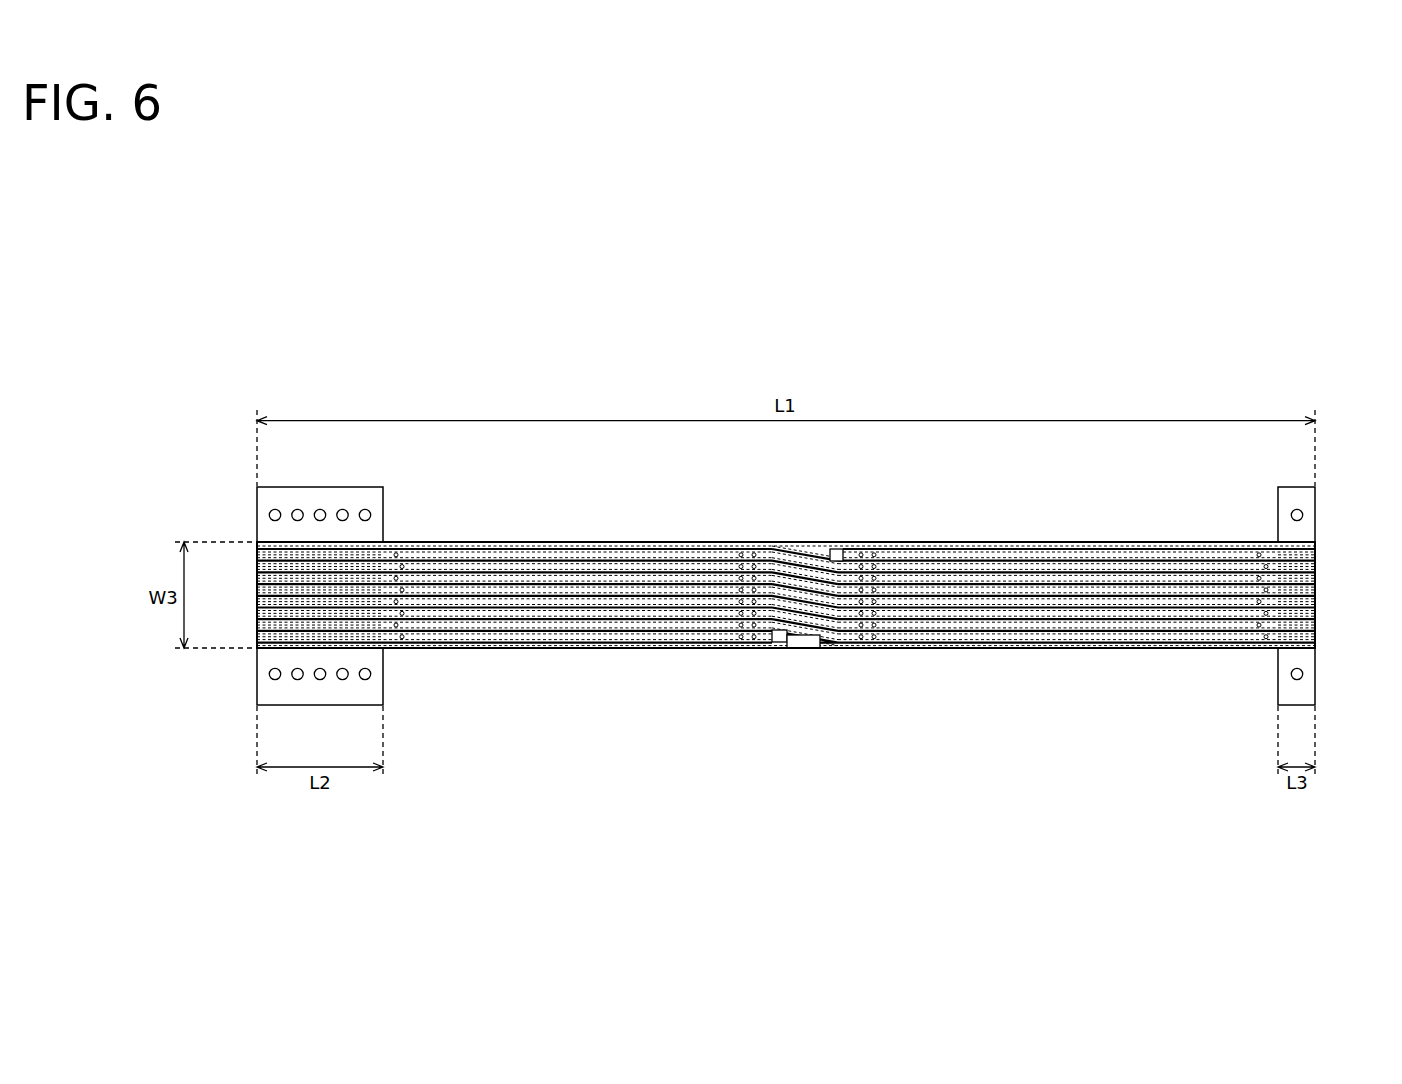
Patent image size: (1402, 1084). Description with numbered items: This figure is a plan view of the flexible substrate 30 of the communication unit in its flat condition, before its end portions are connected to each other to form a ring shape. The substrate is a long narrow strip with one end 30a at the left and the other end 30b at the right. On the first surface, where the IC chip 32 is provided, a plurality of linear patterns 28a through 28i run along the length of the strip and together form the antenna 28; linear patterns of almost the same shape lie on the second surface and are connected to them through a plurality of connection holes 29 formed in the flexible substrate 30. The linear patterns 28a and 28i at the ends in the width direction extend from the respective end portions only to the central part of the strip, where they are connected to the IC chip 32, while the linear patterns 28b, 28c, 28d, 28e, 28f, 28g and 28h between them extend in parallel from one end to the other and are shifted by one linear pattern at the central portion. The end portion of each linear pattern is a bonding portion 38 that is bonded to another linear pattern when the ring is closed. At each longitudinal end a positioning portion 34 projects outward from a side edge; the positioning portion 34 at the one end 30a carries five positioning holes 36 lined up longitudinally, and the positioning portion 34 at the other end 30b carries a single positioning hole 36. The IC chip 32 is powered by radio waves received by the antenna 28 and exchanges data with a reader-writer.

The antenna 28 is at (893, 476).
The linear pattern 28a is at (918, 556).
The linear pattern 28b is at (965, 568).
The linear pattern 28c is at (1010, 578).
The linear pattern 28d is at (1058, 590).
The linear pattern 28e is at (523, 590).
The linear pattern 28f is at (570, 600).
The linear pattern 28g is at (618, 612).
The linear pattern 28h is at (665, 623).
The linear pattern 28i is at (712, 634).
The connection holes 29 is at (403, 638).
The flexible substrate 30 is at (522, 540).
The one end 30a is at (257, 548).
The other end 30b is at (1315, 548).
The IC chip 32 is at (780, 648).
The positioning portion 34 is at (257, 505).
The positioning holes 36 is at (371, 515).
The bonding portion 38 is at (257, 590).